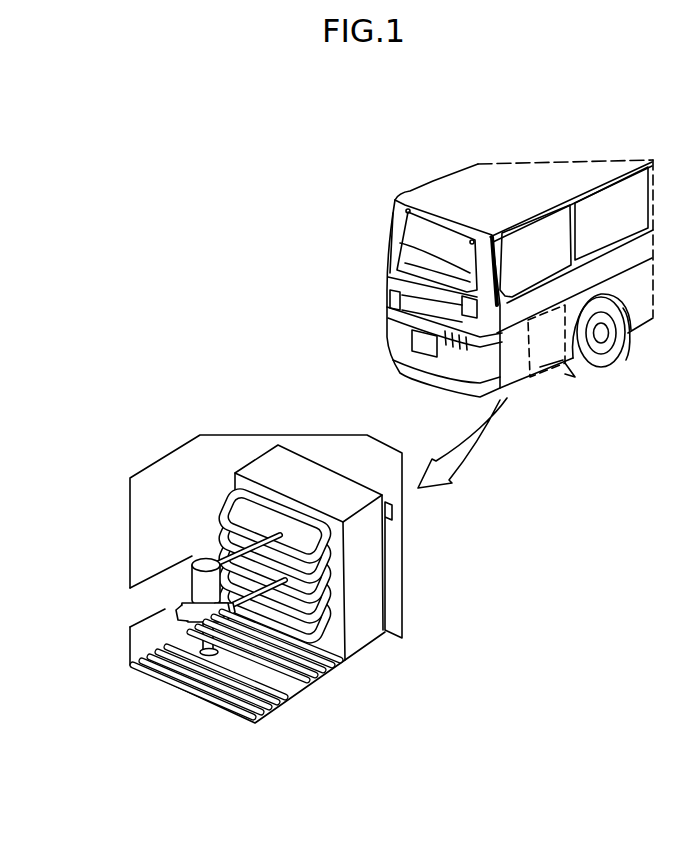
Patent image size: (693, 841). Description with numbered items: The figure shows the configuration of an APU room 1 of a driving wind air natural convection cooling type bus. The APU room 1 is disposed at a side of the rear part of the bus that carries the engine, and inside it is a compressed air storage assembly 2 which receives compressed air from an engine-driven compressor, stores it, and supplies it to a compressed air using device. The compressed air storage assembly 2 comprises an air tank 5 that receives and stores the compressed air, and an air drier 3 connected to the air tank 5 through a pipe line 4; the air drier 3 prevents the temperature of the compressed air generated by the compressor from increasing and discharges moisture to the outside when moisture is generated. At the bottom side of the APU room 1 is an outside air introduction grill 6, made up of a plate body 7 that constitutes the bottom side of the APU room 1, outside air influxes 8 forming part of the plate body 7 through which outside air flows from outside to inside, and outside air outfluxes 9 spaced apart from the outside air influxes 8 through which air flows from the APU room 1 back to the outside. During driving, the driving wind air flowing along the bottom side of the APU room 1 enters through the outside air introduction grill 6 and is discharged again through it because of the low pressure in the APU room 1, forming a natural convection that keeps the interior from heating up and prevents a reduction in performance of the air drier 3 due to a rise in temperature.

The APU room 1 is at (546, 373).
The compressed air storage assembly 2 is at (69, 464).
The air drier 3 is at (192, 565).
The pipe line 4 is at (216, 514).
The air tank 5 is at (262, 462).
The outside air introduction grill 6 is at (276, 705).
The plate body 7 is at (283, 687).
The outside air influxes 8 is at (235, 716).
The outside air outfluxes 9 is at (340, 659).